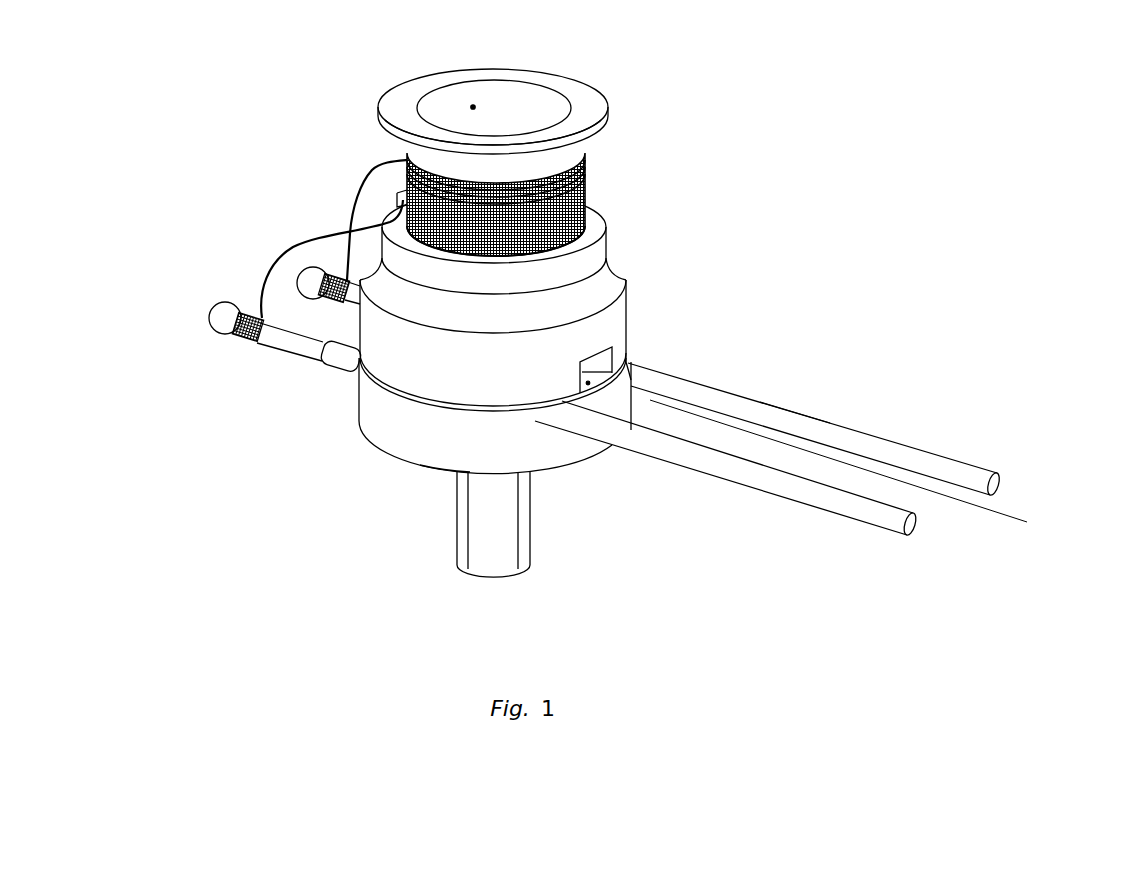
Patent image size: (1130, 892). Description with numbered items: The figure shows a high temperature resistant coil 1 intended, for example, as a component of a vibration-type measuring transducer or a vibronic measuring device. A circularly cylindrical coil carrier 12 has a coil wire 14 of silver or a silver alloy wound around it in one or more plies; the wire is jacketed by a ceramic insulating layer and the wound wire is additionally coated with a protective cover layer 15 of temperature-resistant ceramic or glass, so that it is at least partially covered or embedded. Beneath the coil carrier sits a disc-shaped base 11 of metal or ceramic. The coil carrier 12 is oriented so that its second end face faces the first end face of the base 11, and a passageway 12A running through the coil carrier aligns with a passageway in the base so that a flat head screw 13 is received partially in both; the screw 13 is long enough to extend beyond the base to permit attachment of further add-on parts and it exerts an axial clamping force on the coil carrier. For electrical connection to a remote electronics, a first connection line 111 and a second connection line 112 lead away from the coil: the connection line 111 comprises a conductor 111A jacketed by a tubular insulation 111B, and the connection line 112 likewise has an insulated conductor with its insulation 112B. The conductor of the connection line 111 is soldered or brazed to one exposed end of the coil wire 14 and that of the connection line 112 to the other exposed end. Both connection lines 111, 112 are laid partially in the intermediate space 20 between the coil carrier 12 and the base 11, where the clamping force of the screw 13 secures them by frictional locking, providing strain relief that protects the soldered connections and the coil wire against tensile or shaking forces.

The coil 1 is at (170, 163).
The base 11 is at (489, 455).
The coil carrier 12 is at (404, 362).
The passageway of coil carrier 12A is at (473, 105).
The screw 13 is at (483, 530).
The coil wire 14 is at (600, 173).
The protective cover layer 15 is at (602, 210).
The intermediate space 20 is at (856, 466).
The first connection line 111 is at (866, 532).
The conductor of first connection line 111A is at (272, 335).
The insulation of first connection line 111B is at (337, 360).
The second connection line 112 is at (928, 420).
The insulation of second connection line 112B is at (817, 433).